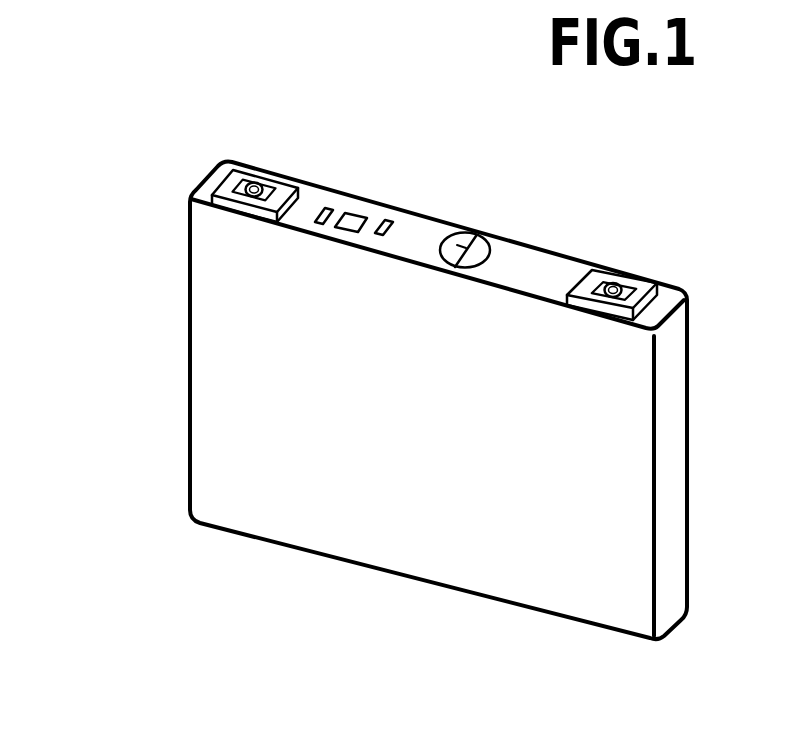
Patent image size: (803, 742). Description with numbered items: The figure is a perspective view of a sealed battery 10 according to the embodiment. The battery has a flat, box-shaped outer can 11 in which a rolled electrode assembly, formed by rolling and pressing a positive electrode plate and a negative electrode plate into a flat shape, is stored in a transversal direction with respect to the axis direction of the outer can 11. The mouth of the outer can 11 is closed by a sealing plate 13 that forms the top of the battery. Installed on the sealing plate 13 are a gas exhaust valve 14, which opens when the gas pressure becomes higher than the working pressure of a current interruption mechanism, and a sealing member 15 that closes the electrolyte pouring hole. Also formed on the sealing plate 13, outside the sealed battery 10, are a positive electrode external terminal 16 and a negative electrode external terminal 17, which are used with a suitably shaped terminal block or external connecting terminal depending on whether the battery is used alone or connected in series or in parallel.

The sealed battery 10 is at (81, 58).
The outer can 11 is at (268, 488).
The sealing plate 13 is at (537, 263).
The gas exhaust valve 14 is at (476, 237).
The sealing member 15 is at (360, 222).
The positive electrode external terminal 16 is at (634, 268).
The negative electrode external terminal 17 is at (261, 171).